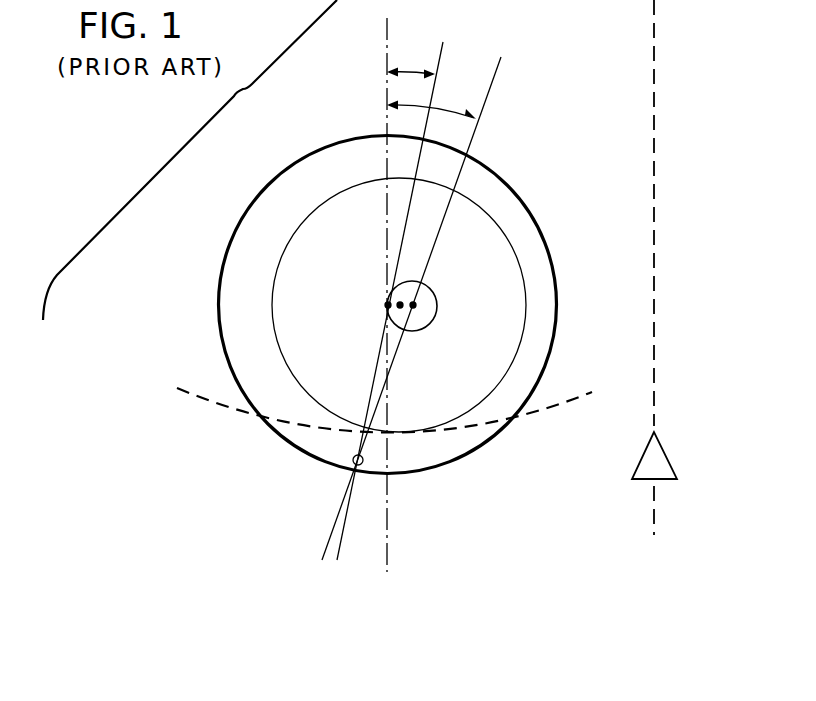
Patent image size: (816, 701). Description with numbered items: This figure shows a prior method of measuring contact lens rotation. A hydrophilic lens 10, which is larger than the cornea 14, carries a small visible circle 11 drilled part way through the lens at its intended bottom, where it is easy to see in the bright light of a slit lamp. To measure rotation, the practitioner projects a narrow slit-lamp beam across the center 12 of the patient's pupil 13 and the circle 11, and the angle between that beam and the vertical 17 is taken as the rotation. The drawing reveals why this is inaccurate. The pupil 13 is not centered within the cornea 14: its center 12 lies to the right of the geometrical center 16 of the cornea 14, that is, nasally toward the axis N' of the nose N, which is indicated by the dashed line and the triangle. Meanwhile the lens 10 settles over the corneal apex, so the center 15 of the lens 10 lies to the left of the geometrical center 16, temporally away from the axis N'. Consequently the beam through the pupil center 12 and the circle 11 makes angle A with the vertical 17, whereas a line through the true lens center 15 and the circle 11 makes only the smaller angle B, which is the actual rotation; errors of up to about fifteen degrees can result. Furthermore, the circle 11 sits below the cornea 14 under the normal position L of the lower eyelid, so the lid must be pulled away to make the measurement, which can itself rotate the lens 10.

The lens 10 is at (540, 221).
The cornea 14 is at (521, 266).
The pupil 13 is at (429, 325).
The center of pupil 12 is at (416, 305).
The center of lens 15 is at (385, 305).
The geometrical center of cornea 16 is at (400, 302).
The small circle 11 is at (353, 464).
The vertical 17 is at (387, 531).
The angle A is at (453, 98).
The angle B is at (412, 68).
The normal position of lower eyelid L is at (563, 404).
The nose N is at (671, 454).
The axis of nose N' is at (676, 267).